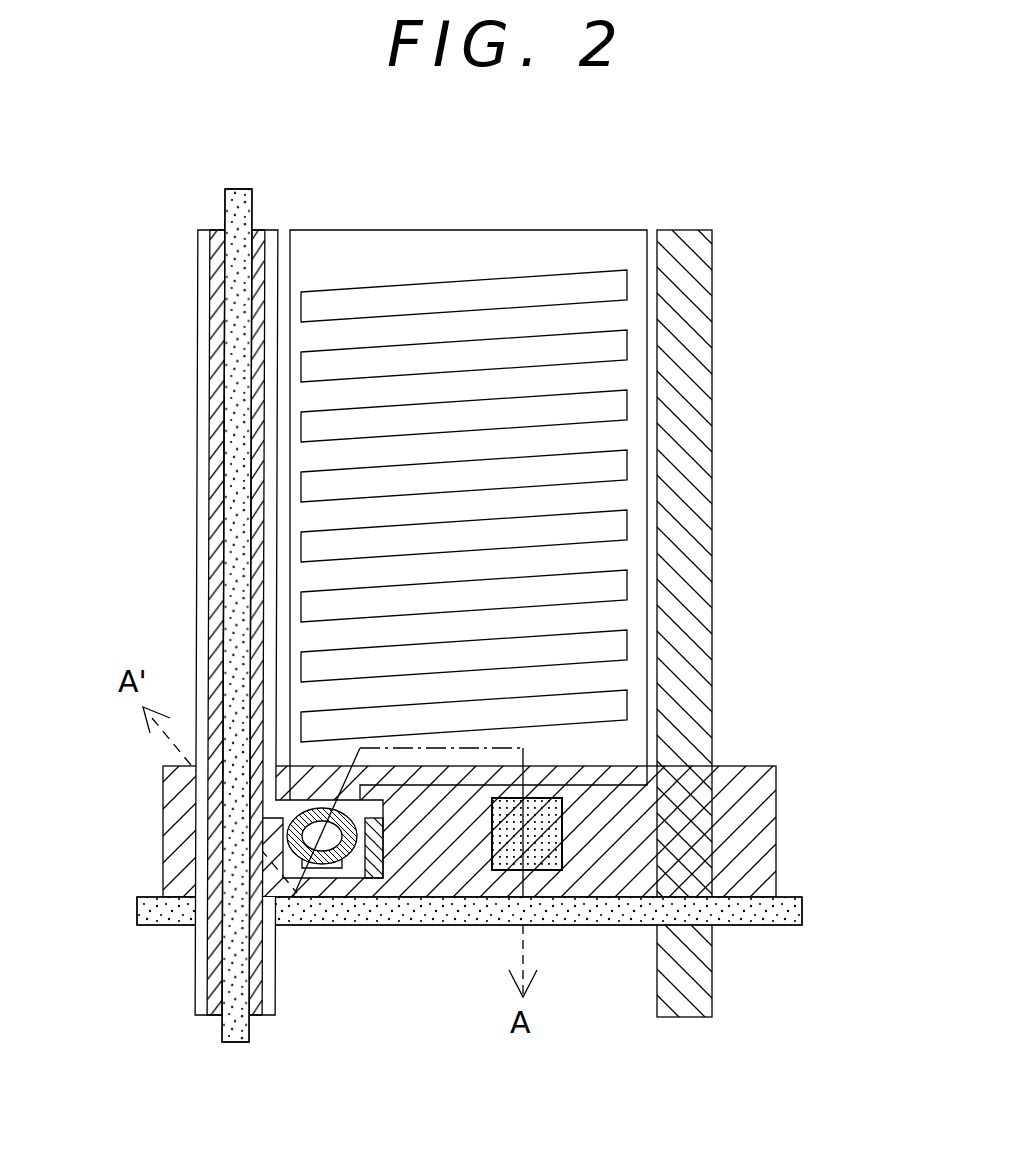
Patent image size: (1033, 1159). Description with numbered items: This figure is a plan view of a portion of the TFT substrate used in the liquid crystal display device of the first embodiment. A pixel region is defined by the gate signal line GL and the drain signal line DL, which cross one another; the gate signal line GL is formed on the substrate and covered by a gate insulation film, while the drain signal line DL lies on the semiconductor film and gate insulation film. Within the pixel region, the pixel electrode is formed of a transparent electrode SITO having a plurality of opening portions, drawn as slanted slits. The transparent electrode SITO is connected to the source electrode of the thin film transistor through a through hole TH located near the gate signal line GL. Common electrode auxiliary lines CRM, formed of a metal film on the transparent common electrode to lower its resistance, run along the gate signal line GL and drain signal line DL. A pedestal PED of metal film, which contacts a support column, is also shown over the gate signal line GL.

The transparent electrode SITO is at (461, 252).
The drain signal line DL is at (213, 510).
The gate signal line GL is at (760, 832).
The through hole TH is at (328, 845).
The pedestal PED is at (540, 857).
The common electrode auxiliary line CRM is at (460, 630).